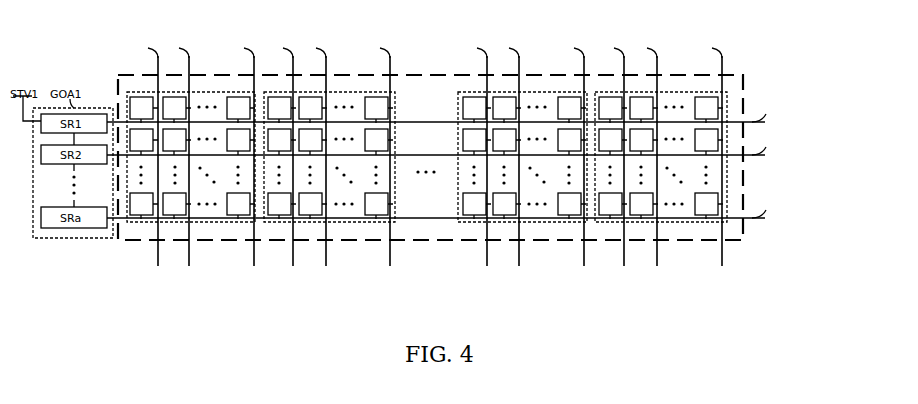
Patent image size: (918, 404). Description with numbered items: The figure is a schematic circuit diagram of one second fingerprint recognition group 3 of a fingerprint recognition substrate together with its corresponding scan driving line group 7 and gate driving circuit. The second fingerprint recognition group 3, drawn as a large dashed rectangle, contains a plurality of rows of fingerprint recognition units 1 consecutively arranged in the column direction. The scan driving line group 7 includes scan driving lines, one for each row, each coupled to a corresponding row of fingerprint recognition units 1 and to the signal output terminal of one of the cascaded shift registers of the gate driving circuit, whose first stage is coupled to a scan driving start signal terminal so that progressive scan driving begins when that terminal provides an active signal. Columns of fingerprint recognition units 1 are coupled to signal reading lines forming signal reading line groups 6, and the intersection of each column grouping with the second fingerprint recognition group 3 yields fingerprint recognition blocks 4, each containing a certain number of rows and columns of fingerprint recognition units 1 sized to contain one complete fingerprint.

The fingerprint recognition unit 1 is at (128, 99).
The second fingerprint recognition group 3 is at (750, 80).
The fingerprint recognition block 4 is at (406, 178).
The signal reading line group 6 is at (242, 40).
The scan driving line group 7 is at (795, 108).